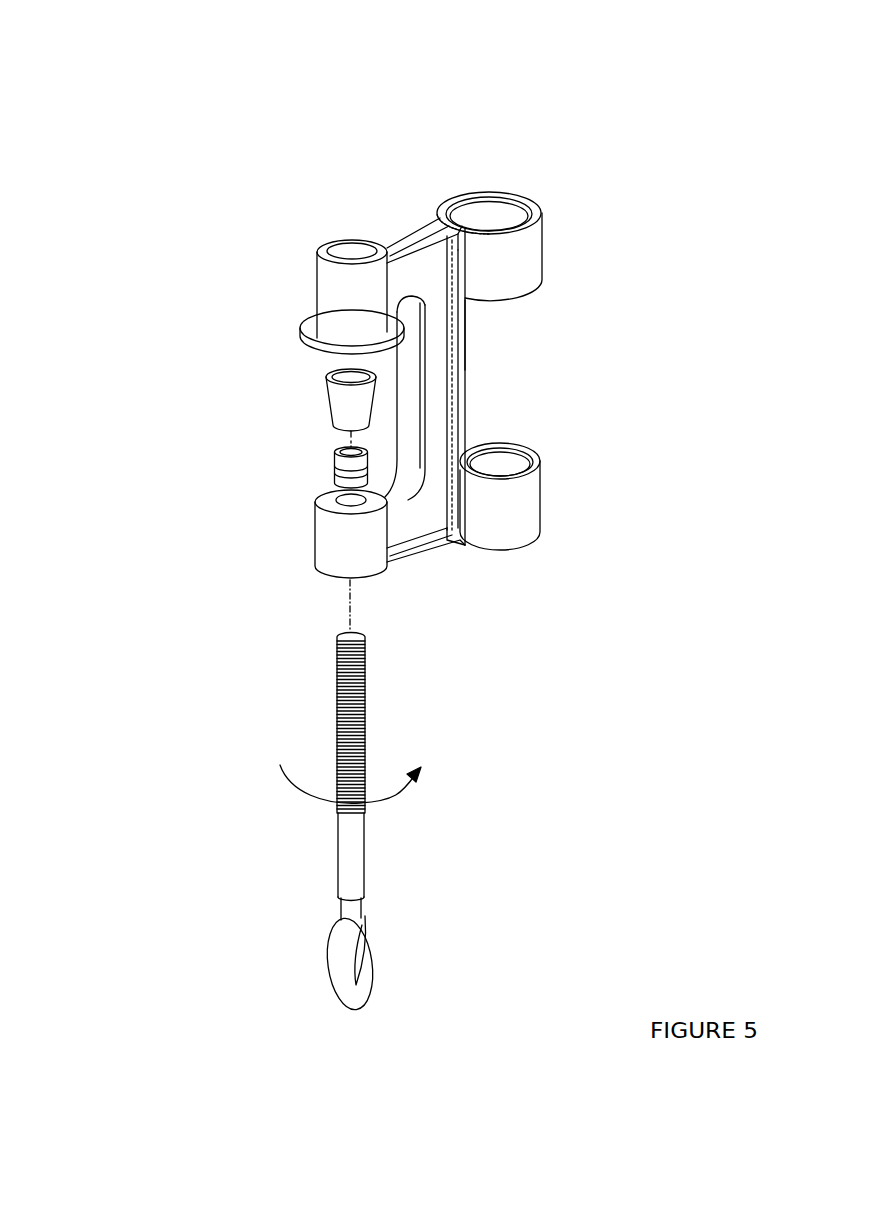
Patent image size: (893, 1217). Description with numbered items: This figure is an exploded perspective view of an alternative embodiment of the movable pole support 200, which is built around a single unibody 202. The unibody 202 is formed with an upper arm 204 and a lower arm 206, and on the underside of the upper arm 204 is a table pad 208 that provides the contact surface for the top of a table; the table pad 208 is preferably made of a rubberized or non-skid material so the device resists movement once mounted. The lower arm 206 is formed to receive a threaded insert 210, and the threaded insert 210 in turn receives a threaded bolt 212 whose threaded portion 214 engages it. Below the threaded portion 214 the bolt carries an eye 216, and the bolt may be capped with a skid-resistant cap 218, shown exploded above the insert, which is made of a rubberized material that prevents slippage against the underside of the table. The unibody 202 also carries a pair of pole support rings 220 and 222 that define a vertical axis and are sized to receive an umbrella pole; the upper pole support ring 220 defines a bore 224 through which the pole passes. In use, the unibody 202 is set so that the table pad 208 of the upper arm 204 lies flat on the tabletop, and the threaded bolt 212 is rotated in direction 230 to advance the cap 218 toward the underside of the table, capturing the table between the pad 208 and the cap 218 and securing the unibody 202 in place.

The movable pole support 200 is at (205, 222).
The unibody 202 is at (440, 397).
The upper arm 204 is at (317, 272).
The lower arm 206 is at (320, 540).
The table pad 208 is at (303, 333).
The threaded insert 210 is at (337, 465).
The threaded bolt 212 is at (363, 857).
The threaded portion 214 is at (367, 712).
The eye 216 is at (367, 965).
The skid-resistant cap 218 is at (343, 403).
The pole support ring 220 is at (525, 248).
The pole support ring 222 is at (525, 503).
The bore 224 is at (490, 215).
The direction of rotation 230 is at (282, 775).